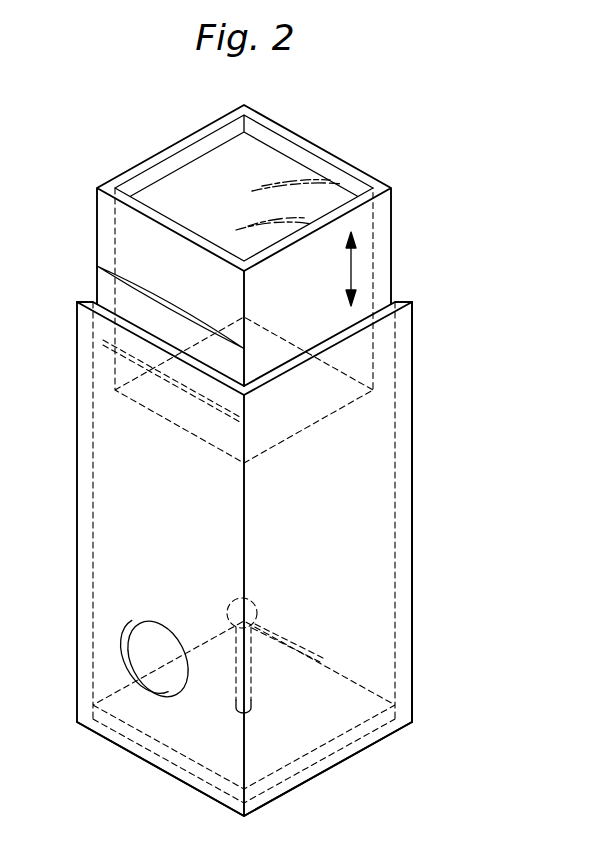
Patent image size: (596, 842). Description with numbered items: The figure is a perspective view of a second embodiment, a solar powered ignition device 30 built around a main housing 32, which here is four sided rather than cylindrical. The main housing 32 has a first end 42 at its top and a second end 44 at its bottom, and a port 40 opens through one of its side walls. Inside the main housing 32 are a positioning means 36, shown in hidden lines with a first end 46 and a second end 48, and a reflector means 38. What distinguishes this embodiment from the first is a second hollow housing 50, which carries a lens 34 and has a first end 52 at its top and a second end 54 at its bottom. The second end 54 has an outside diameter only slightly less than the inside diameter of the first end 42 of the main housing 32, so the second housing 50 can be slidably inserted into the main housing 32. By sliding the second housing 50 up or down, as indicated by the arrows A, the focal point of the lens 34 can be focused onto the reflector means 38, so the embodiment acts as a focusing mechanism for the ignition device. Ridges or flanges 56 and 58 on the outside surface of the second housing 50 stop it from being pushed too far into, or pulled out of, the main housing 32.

The solar powered ignition device 30 is at (414, 538).
The main housing 32 is at (412, 587).
The lens 34 is at (298, 181).
The positioning means 36 is at (251, 670).
The reflector means 38 is at (256, 606).
The port 40 is at (133, 668).
The first end of the housing 42 is at (80, 301).
The second end of the housing 44 is at (150, 765).
The first end of the positioning means 46 is at (322, 663).
The second end of the positioning means 48 is at (251, 713).
The second hollow housing 50 is at (392, 233).
The first end of the second housing 52 is at (373, 181).
The second end of the second housing 54 is at (374, 403).
The ridge or flange 56 is at (97, 268).
The ridge or flange 58 is at (100, 340).
The arrows A is at (354, 273).